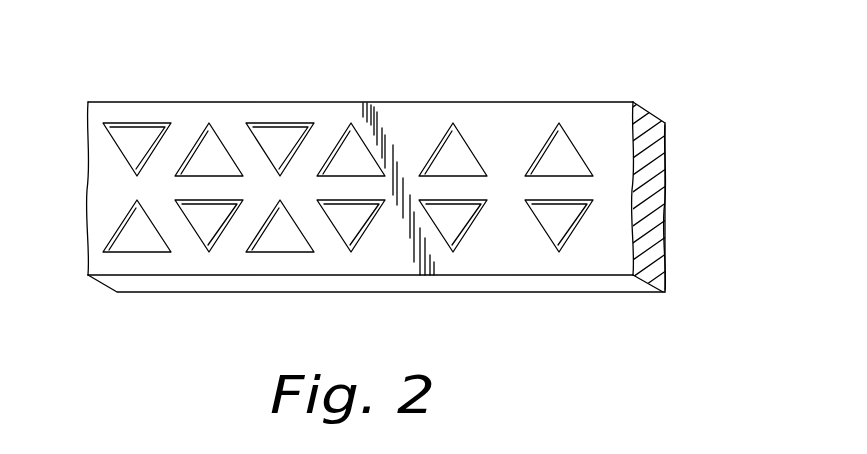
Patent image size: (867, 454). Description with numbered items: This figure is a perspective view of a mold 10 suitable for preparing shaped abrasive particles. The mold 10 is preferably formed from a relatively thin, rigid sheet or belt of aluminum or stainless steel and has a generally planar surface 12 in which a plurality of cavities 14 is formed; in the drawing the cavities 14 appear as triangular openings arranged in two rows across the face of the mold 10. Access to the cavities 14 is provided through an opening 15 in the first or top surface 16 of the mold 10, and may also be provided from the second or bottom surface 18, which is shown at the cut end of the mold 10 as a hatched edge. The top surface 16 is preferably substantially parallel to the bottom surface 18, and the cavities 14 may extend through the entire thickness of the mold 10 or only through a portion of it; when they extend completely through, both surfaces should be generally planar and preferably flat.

The mold 10 is at (643, 70).
The planar surface 12 is at (100, 179).
The cavities 14 is at (463, 146).
The opening 15 is at (218, 147).
The first or top surface 16 is at (622, 138).
The second or bottom surface 18 is at (666, 132).